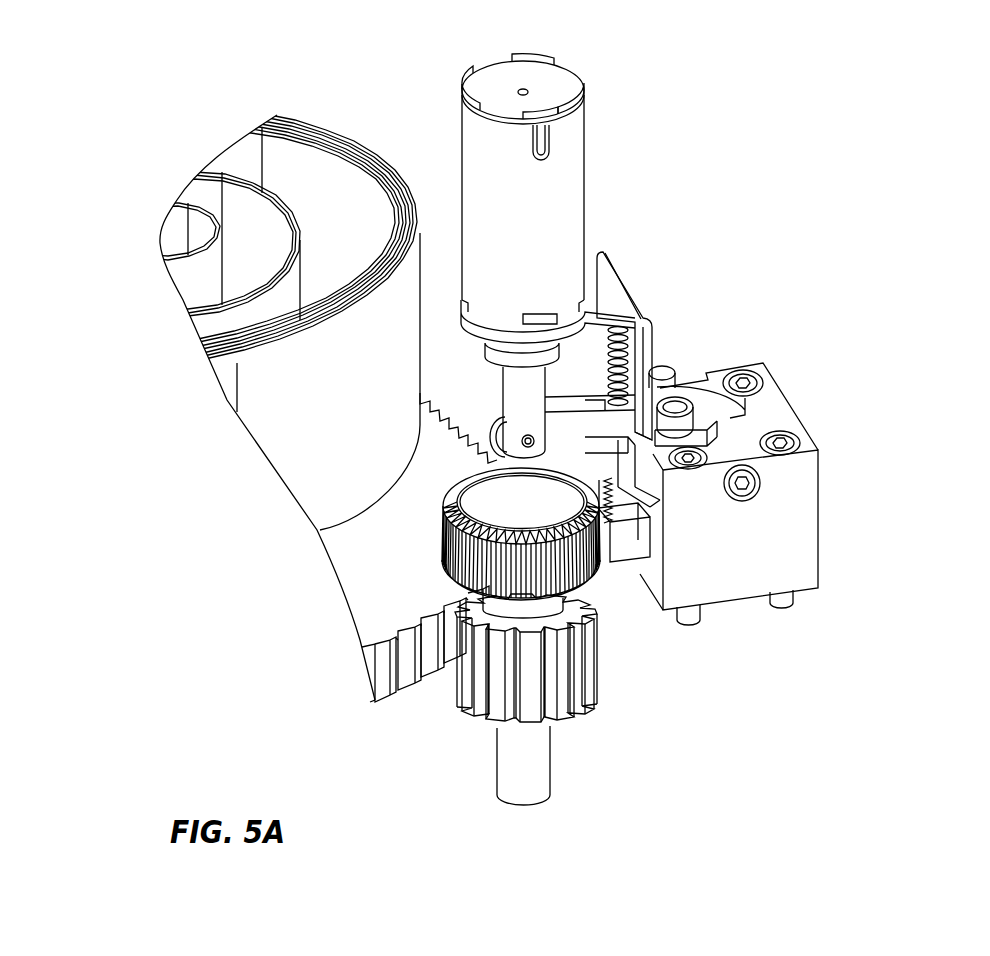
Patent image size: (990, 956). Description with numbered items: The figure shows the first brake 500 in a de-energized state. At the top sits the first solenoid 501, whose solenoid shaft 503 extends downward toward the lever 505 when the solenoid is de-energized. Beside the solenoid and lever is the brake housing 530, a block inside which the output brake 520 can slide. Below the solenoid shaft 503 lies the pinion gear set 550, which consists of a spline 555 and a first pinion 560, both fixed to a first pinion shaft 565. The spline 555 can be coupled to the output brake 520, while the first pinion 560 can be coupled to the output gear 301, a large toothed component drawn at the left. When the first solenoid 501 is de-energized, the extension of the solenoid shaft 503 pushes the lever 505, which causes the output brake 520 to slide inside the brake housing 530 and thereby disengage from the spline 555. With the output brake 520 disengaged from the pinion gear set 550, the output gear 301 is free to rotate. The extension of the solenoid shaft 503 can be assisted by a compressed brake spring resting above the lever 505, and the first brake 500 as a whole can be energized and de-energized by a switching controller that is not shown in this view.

The first brake 500 is at (898, 117).
The first solenoid 501 is at (577, 128).
The solenoid shaft 503 is at (507, 403).
The lever 505 is at (577, 420).
The output brake 520 is at (623, 552).
The brake housing 530 is at (797, 522).
The pinion gear set 550 is at (560, 798).
The spline 555 is at (447, 543).
The first pinion 560 is at (587, 690).
The first pinion shaft 565 is at (547, 760).
The output gear 301 is at (410, 698).